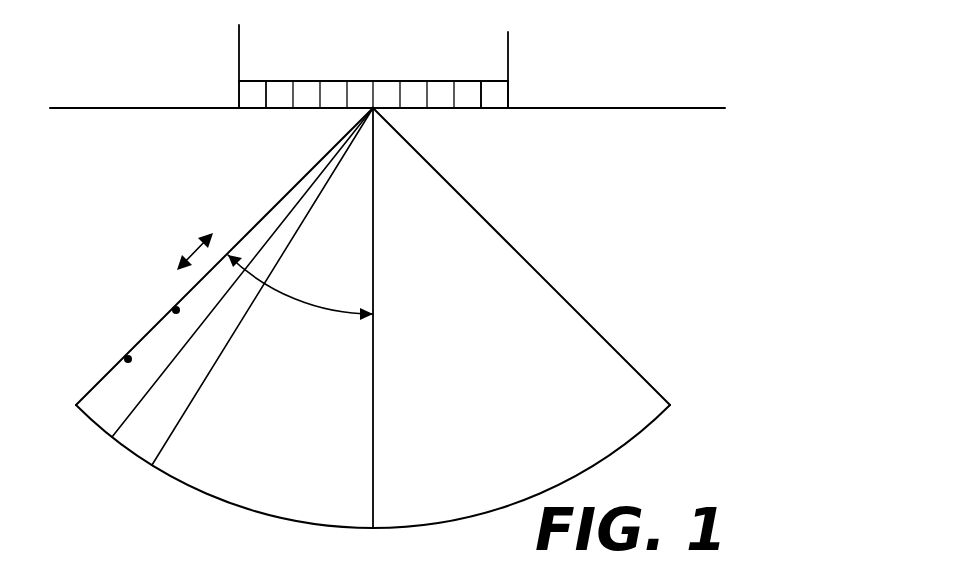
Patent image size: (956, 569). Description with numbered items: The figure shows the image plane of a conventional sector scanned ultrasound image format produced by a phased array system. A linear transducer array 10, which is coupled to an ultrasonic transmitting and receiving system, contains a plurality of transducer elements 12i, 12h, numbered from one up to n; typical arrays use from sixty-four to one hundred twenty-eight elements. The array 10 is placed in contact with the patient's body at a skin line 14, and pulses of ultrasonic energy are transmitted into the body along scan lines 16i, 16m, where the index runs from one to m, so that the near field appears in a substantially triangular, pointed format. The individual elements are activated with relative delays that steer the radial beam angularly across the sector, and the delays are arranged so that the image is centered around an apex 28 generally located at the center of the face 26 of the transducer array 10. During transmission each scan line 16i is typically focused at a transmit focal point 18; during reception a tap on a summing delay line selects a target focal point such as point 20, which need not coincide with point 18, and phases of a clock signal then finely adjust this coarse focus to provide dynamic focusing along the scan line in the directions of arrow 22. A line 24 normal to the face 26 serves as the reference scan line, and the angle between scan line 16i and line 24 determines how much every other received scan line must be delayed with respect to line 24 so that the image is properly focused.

The transducer array 10 is at (377, 42).
The transducer element 12i is at (256, 81).
The transducer element 12h is at (493, 81).
The skin line 14 is at (578, 107).
The scan line 16i is at (300, 183).
The scan line 16m is at (524, 259).
The transmit focal point 18 is at (174, 308).
The focal point 20 is at (127, 356).
The arrow 22 is at (190, 257).
The line normal to the face 24 is at (374, 440).
The face 26 is at (483, 109).
The apex 28 is at (376, 110).